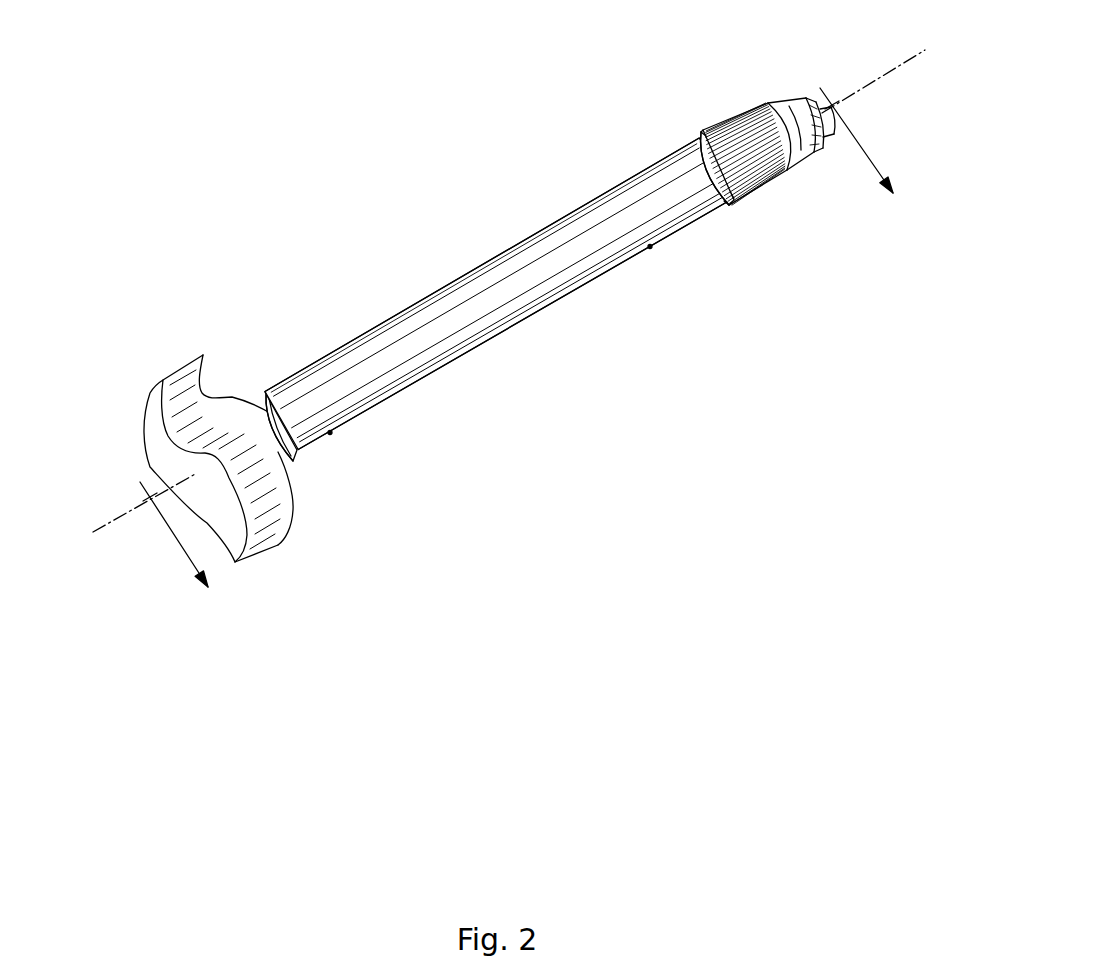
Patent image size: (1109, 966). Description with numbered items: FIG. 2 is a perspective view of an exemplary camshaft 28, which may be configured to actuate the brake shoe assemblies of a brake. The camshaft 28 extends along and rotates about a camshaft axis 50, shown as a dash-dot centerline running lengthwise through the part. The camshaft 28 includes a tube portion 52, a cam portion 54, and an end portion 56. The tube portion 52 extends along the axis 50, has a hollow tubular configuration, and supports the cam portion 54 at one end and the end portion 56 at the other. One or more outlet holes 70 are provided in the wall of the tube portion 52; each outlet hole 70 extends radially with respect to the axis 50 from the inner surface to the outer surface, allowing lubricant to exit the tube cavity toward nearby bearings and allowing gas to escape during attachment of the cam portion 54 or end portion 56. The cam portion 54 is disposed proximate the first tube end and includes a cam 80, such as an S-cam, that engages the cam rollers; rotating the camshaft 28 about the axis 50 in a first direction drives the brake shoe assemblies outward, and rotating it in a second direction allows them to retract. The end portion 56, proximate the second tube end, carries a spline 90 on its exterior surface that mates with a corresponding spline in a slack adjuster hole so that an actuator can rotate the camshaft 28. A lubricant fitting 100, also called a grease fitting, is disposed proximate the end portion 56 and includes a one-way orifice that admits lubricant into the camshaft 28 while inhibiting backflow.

The camshaft 28 is at (360, 166).
The camshaft axis 50 is at (857, 90).
The tube portion 52 is at (495, 245).
The cam portion 54 is at (128, 440).
The end portion 56 is at (694, 133).
The outlet hole 70 is at (650, 248).
The cam 80 is at (164, 379).
The spline 90 is at (722, 125).
The lubricant fitting 100 is at (803, 99).